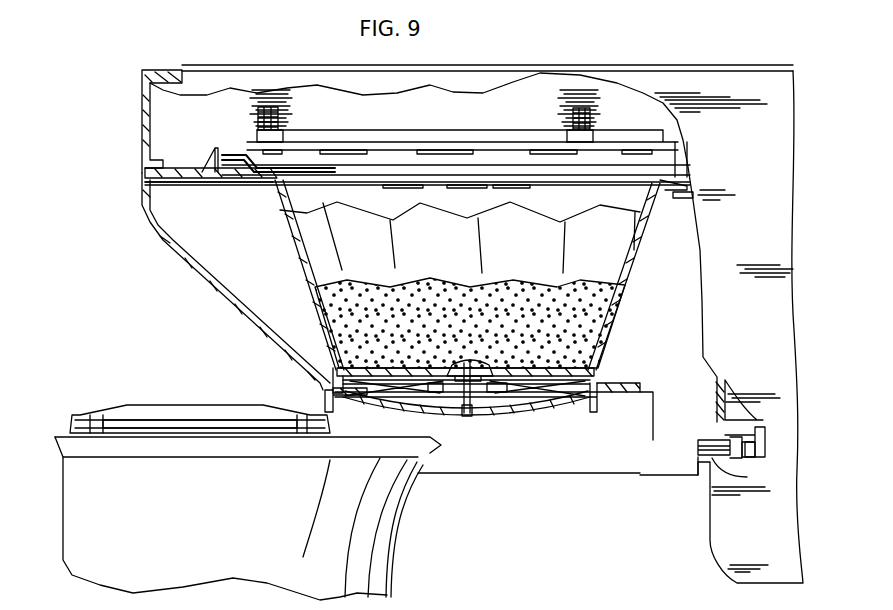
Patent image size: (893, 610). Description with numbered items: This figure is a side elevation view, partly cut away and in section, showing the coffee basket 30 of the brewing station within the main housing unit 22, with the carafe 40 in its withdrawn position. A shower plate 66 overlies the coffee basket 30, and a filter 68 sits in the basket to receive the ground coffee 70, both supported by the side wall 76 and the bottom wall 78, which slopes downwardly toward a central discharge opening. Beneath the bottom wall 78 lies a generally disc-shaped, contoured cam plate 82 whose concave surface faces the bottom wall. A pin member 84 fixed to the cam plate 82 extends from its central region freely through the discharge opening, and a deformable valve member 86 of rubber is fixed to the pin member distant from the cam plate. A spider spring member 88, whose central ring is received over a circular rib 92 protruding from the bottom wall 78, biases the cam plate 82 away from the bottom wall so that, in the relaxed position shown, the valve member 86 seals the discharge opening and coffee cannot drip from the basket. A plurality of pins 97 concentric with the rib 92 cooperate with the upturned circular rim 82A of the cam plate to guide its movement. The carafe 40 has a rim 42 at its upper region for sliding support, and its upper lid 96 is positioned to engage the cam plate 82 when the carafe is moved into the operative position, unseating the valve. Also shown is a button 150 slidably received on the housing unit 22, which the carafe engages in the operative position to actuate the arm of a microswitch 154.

The main housing unit 22 is at (716, 60).
The coffee basket 30 is at (188, 268).
The carafe 40 is at (298, 536).
The rim 42 is at (190, 447).
The shower plate 66 is at (403, 158).
The filter 68 is at (307, 223).
The ground coffee 70 is at (598, 308).
The side wall 76 is at (647, 232).
The bottom wall 78 is at (378, 367).
The cam plate 82 is at (513, 410).
The upturned circular rim 82A is at (320, 393).
The pin member 84 is at (450, 404).
The valve member 86 is at (478, 364).
The spider spring member 88 is at (558, 410).
The circular rib 92 is at (447, 367).
The upper lid 96 is at (122, 425).
The pins 97 is at (595, 390).
The button 150 is at (710, 442).
The microswitch 154 is at (750, 458).